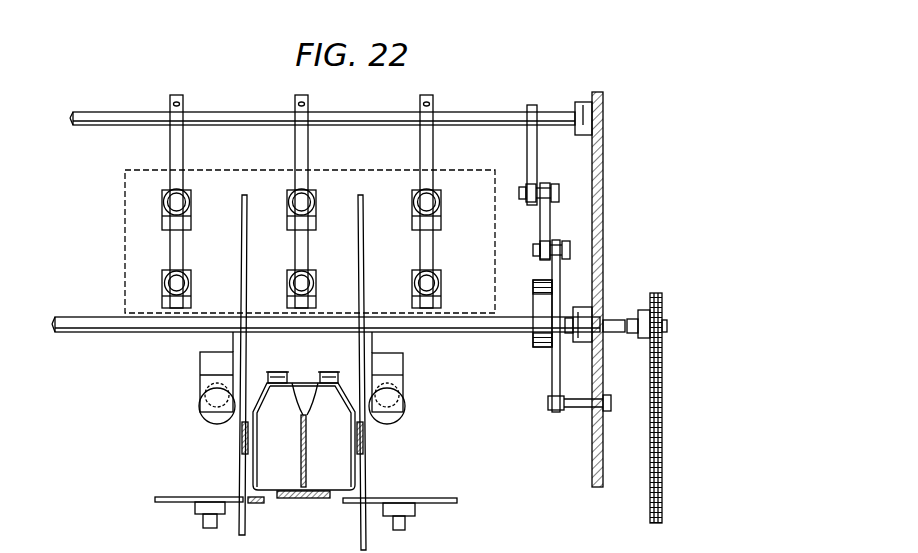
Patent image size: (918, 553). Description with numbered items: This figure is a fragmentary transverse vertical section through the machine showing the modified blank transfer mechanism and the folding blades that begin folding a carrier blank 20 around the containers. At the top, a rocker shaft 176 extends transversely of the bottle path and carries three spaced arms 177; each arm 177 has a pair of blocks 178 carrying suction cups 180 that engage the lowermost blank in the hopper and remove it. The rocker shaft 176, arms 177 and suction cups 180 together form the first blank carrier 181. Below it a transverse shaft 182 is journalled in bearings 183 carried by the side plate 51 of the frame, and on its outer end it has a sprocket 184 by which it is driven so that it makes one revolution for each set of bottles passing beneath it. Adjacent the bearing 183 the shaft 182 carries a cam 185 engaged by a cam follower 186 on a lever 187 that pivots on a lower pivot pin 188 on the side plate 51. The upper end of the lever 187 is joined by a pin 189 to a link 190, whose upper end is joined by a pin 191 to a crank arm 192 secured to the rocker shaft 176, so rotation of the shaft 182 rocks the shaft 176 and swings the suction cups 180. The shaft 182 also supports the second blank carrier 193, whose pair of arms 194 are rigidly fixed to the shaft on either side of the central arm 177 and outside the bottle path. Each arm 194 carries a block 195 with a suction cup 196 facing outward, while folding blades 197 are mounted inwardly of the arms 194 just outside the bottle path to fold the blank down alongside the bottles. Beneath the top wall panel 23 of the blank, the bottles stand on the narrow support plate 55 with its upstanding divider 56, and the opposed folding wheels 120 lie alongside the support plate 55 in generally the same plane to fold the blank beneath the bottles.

The rocker shaft 176 is at (226, 114).
The arms 177 is at (296, 145).
The blocks 178 is at (315, 222).
The suction cups 180 is at (183, 204).
The first blank carrier 181 is at (356, 106).
The transverse shaft 182 is at (93, 333).
The bearings 183 is at (584, 314).
The sprocket 184 is at (658, 294).
The cam 185 is at (533, 292).
The cam follower 186 is at (542, 335).
The lever 187 is at (553, 370).
The lower pivot pin 188 is at (548, 402).
The pin 189 is at (533, 250).
The link 190 is at (540, 212).
The pin 191 is at (519, 193).
The crank arm 192 is at (527, 140).
The second blank carrier 193 is at (200, 343).
The arms 194 is at (240, 298).
The block 195 is at (203, 362).
The suction cup 196 is at (200, 418).
The folding blades 197 is at (241, 438).
The side plate 51 is at (604, 172).
The top wall panel 23 is at (298, 383).
The divider 56 is at (306, 430).
The support plate 55 is at (305, 495).
The carrier blank 20 is at (256, 506).
The folding wheels 120 is at (187, 494).